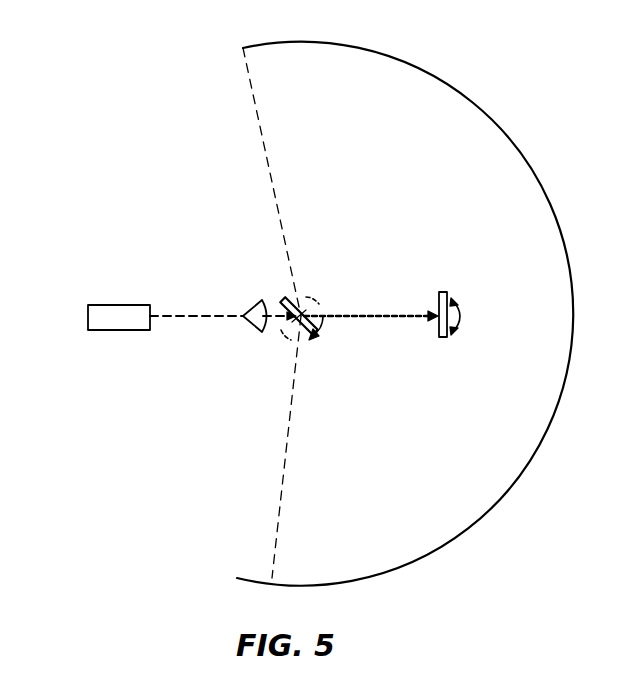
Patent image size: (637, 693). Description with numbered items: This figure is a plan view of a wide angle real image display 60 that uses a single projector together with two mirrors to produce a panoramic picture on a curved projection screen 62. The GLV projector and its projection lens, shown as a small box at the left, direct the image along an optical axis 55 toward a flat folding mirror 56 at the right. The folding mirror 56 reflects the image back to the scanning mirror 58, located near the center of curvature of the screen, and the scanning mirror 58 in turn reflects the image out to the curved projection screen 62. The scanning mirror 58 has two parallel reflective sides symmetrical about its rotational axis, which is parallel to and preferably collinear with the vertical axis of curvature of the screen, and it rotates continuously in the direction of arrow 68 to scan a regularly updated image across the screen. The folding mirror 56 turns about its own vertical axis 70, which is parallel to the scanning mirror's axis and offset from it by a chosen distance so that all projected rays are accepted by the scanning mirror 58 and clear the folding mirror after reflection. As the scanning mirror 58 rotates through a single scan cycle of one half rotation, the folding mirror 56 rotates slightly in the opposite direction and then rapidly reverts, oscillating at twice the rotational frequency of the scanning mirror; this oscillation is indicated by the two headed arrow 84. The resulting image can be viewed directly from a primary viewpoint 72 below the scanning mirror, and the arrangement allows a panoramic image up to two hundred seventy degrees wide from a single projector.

The wide angle real image display 60 is at (140, 190).
The curved projection screen 62 is at (474, 100).
The optical axis 55 is at (183, 316).
The primary viewpoint 72 is at (257, 326).
The scanning mirror 58 is at (286, 298).
The arrow indicating direction of rotation 68 is at (318, 325).
The vertical axis of folding mirror 70 is at (440, 318).
The folding mirror 56 is at (448, 293).
The two headed arrow 84 is at (462, 318).